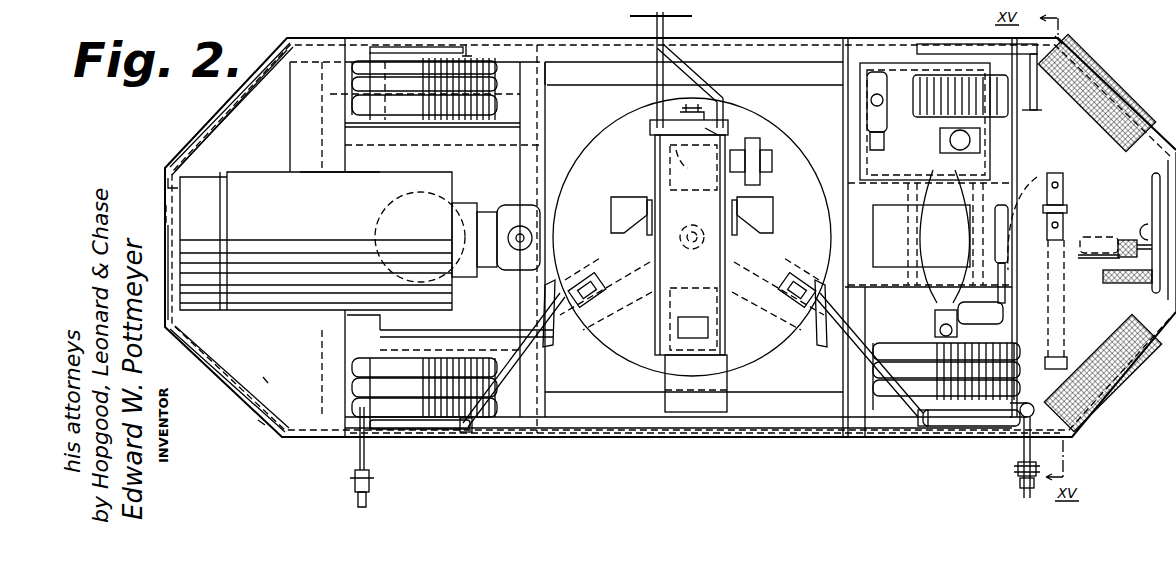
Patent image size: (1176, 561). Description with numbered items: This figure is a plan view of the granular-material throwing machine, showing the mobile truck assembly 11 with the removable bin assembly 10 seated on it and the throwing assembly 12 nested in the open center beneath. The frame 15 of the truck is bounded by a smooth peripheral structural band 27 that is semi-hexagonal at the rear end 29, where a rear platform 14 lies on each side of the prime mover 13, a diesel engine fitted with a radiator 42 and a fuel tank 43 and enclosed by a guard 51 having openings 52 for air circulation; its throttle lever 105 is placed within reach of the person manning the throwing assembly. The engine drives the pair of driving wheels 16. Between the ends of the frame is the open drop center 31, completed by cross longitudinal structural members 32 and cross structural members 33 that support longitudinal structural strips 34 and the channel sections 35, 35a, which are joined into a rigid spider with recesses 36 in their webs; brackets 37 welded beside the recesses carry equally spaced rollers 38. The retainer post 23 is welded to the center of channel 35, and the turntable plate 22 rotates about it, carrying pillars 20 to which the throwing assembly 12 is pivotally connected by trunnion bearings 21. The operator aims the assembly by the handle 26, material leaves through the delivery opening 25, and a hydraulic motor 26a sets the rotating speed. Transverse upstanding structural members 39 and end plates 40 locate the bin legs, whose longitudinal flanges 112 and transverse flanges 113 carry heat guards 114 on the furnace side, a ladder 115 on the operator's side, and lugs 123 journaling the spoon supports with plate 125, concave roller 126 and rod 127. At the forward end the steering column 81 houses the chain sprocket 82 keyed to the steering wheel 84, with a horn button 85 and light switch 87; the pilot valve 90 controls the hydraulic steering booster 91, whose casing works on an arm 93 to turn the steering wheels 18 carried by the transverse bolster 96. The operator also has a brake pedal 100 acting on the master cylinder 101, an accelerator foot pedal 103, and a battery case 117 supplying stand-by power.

The removable bin assembly 10 is at (420, 237).
The mobile truck assembly 11 is at (880, 440).
The throwing assembly 12 is at (680, 197).
The prime mover 13 is at (267, 190).
The rear platform 14 is at (263, 377).
The rigid structural frame 15 is at (260, 417).
The driving wheels 16 is at (413, 40).
The steering wheels 18 is at (907, 357).
The pillars 20 is at (620, 208).
The trunnion bearings 21 is at (643, 217).
The turntable plate 22 is at (603, 130).
The vertical post 23 is at (696, 224).
The delivery opening 25 is at (708, 330).
The handle 26 is at (673, 28).
The hydraulic motor 26a is at (762, 140).
The peripheral structural band 27 is at (773, 380).
The rear end 29 is at (193, 130).
The open drop center 31 is at (737, 455).
The cross longitudinal structural members 32 is at (457, 153).
The cross structural members 33 is at (320, 147).
The longitudinal structural strips 34 is at (587, 75).
The channel section 35 is at (750, 75).
The channel section 35a is at (567, 343).
The recesses 36 is at (650, 155).
The brackets 37 is at (723, 100).
The rollers 38 is at (688, 143).
The transverse upstanding structural members 39 is at (347, 327).
The end plates 40 is at (442, 44).
The radiator 42 is at (193, 190).
The fuel tank 43 is at (317, 190).
The guard 51 is at (167, 230).
The openings 52 is at (160, 215).
The steering column 81 is at (1165, 232).
The chain sprocket 82 is at (1168, 192).
The steering wheel 84 is at (1165, 195).
The horn button 85 is at (1140, 232).
The light switch 87 is at (1155, 293).
The pilot valve 90 is at (1060, 222).
The hydraulic steering booster 91 is at (1065, 307).
The arm 93 is at (1037, 177).
The transverse bolster 96 is at (933, 300).
The brake pedal 100 is at (1118, 248).
The master hydraulic braking system cylinder 101 is at (1050, 268).
The accelerator foot pedal 103 is at (1105, 277).
The throttle lever 105 is at (463, 186).
The longitudinal flanges 112 is at (350, 107).
The transverse flanges 113 is at (477, 47).
The heat guards 114 is at (515, 360).
The ladder 115 is at (1063, 40).
The battery case 117 is at (890, 217).
The lugs 123 is at (1023, 397).
The plate 125 is at (1020, 457).
The concave roller 126 is at (1017, 482).
The rod 127 is at (1017, 499).